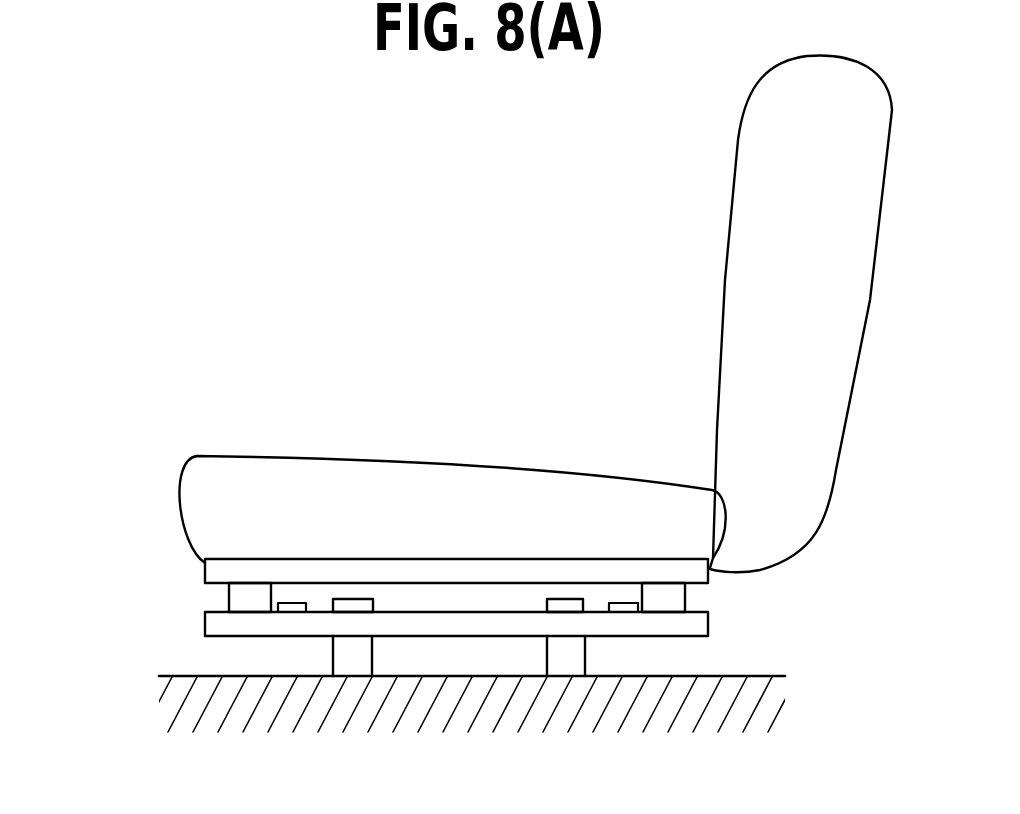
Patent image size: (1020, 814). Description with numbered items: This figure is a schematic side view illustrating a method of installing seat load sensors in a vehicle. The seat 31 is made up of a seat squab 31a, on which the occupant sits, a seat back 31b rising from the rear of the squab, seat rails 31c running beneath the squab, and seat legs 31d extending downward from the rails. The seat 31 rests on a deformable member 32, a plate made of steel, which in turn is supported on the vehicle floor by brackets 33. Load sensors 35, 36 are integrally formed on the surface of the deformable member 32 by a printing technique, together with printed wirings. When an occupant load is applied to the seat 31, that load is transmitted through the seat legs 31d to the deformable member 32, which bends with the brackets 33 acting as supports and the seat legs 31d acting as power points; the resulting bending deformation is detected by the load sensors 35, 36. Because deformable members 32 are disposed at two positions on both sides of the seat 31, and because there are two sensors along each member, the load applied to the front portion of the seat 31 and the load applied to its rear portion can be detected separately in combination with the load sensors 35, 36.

The seat 31 is at (535, 313).
The seat squab 31a is at (444, 512).
The seat back 31b is at (753, 310).
The seat rails 31c is at (215, 572).
The seat legs 31d is at (242, 599).
The deformable member 32 is at (622, 627).
The bracket 33 is at (560, 670).
The load sensor 35 is at (292, 603).
The load sensor 36 is at (620, 603).